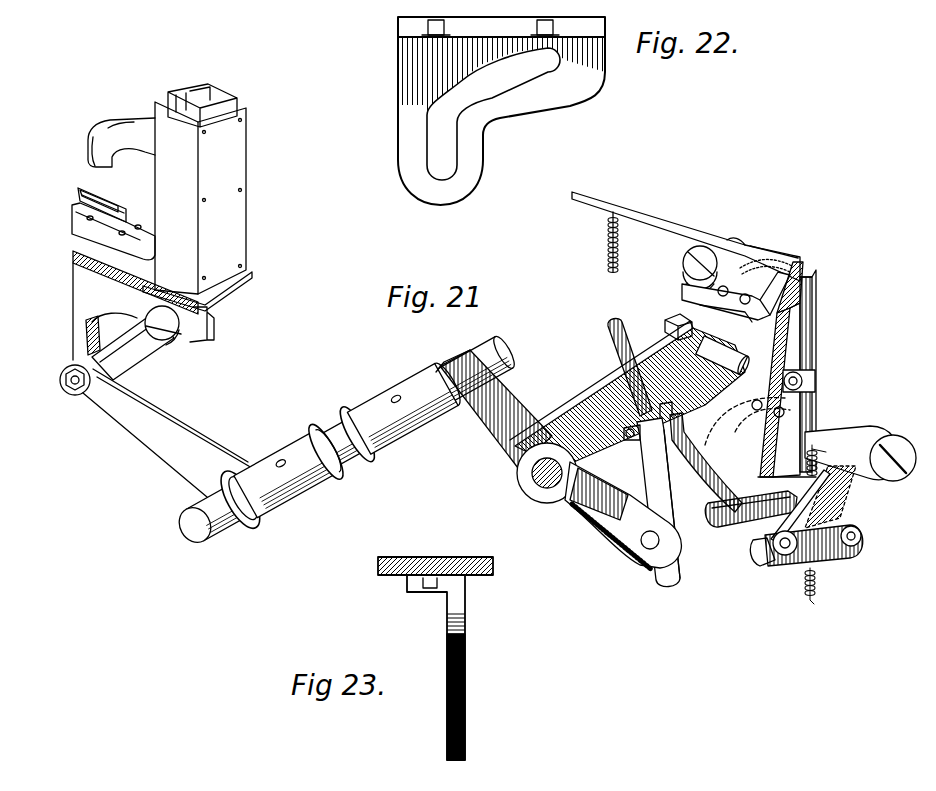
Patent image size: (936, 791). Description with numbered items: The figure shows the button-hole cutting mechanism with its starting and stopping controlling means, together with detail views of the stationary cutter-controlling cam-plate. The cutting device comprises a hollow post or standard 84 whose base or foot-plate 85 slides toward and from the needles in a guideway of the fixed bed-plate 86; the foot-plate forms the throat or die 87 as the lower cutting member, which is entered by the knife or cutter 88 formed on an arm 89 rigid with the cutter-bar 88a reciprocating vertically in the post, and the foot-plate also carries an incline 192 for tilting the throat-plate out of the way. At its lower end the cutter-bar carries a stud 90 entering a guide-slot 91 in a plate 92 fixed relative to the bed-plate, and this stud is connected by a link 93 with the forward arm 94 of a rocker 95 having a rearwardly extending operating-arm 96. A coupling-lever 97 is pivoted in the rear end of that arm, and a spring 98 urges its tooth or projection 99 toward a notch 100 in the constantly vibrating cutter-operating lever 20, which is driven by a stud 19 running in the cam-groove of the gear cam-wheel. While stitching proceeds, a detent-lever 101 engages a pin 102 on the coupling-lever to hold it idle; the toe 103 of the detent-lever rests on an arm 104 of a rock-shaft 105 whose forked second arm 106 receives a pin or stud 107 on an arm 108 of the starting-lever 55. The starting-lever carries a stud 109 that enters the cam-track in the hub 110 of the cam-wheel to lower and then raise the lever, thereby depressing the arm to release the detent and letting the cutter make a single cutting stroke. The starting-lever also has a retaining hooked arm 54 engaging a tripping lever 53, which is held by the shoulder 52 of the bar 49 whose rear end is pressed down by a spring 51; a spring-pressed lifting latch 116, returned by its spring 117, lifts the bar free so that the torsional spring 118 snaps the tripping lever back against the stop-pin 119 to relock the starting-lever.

In FIG. 21, the stud 19 is at (742, 353).
In FIG. 21, the cutter-operating lever 20 is at (588, 407).
In FIG. 21, the bar 49 is at (658, 218).
In FIG. 21, the spring 51 is at (603, 243).
In FIG. 21, the shoulder 52 is at (733, 257).
In FIG. 21, the tripping lever 53 is at (753, 267).
In FIG. 21, the hooked arm 54 is at (796, 275).
In FIG. 21, the starting-lever 55 is at (840, 430).
In FIG. 21, the hollow post or standard 84 is at (236, 156).
In FIG. 21, the base or foot-plate 85 is at (140, 244).
In FIG. 23, the bed-plate 86 is at (472, 553).
In FIG. 21, the throat or die 87 is at (80, 200).
In FIG. 21, the knife or cutter 88 is at (94, 153).
In FIG. 21, the cutter-bar 88a is at (212, 97).
In FIG. 21, the arm 89 is at (121, 130).
In FIG. 21, the stud 90 is at (175, 338).
In FIG. 21, the guide-slot 91 is at (105, 330).
In FIG. 22, the guide-slot 91 is at (440, 133).
In FIG. 21, the plate 92 is at (143, 305).
In FIG. 22, the plate 92 is at (413, 70).
In FIG. 23, the plate 92 is at (457, 610).
In FIG. 21, the link 93 is at (127, 353).
In FIG. 21, the forward arm 94 is at (187, 430).
In FIG. 21, the rocker 95 is at (289, 447).
In FIG. 21, the operating-arm 96 is at (505, 410).
In FIG. 21, the coupling-lever 97 is at (647, 462).
In FIG. 21, the spring 98 is at (620, 547).
In FIG. 21, the tooth or projection 99 is at (686, 440).
In FIG. 21, the notch 100 is at (688, 345).
In FIG. 21, the detent-lever 101 is at (624, 362).
In FIG. 21, the pin 102 is at (630, 423).
In FIG. 21, the toe 103 is at (750, 505).
In FIG. 21, the arm 104 is at (730, 527).
In FIG. 21, the rock-shaft 105 is at (863, 530).
In FIG. 21, the second arm 106 is at (827, 560).
In FIG. 21, the pin or stud 107 is at (775, 563).
In FIG. 21, the arm 108 is at (853, 488).
In FIG. 21, the stud 109 is at (763, 405).
In FIG. 21, the hub 110 is at (750, 430).
In FIG. 21, the lifting latch 116 is at (818, 307).
In FIG. 21, the spring 117 is at (850, 363).
In FIG. 21, the torsional spring 118 is at (683, 273).
In FIG. 21, the stop-pin 119 is at (742, 308).
In FIG. 21, the incline 192 is at (82, 198).